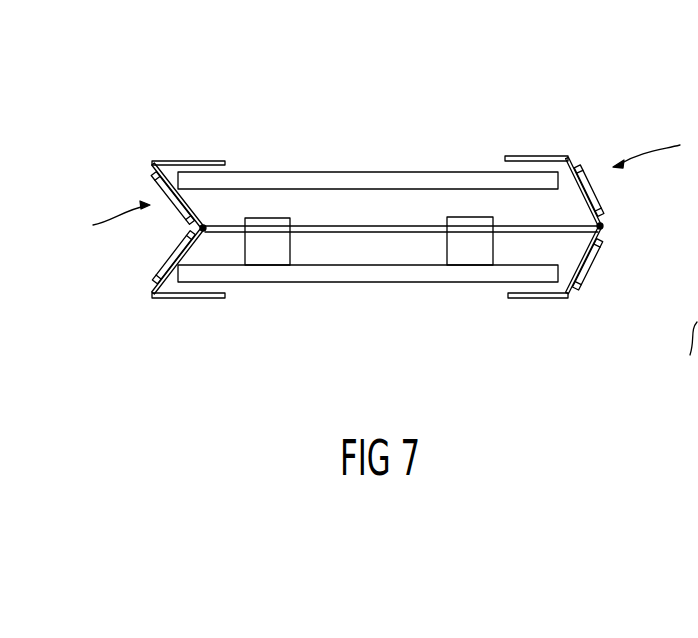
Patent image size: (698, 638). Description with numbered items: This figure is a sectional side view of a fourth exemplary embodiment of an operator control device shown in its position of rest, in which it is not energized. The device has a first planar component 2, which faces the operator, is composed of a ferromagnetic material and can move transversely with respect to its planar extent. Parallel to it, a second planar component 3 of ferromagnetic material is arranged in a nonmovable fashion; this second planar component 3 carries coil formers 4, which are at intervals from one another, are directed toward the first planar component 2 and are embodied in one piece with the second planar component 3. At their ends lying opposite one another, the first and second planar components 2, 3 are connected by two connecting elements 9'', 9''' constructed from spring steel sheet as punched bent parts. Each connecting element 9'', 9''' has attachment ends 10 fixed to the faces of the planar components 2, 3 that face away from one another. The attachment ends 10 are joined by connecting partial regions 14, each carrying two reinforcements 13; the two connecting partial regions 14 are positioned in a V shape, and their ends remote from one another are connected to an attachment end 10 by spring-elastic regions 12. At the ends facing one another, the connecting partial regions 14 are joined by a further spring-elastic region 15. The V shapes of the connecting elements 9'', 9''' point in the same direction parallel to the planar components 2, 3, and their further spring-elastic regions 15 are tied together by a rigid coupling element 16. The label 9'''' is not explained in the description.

The first planar component 2 is at (365, 174).
The second planar component 3 is at (330, 273).
The coil formers 4 is at (268, 218).
The attachment ends 10 is at (195, 160).
The spring-elastic regions 12 is at (152, 165).
The reinforcements 13 is at (168, 218).
The connecting partial regions 14 is at (150, 181).
The further spring-elastic region 15 is at (590, 226).
The rigid coupling element 16 is at (410, 233).
The connecting element 9'' is at (110, 218).
The connecting element 9''' is at (655, 141).
The force direction 9'''' is at (689, 352).